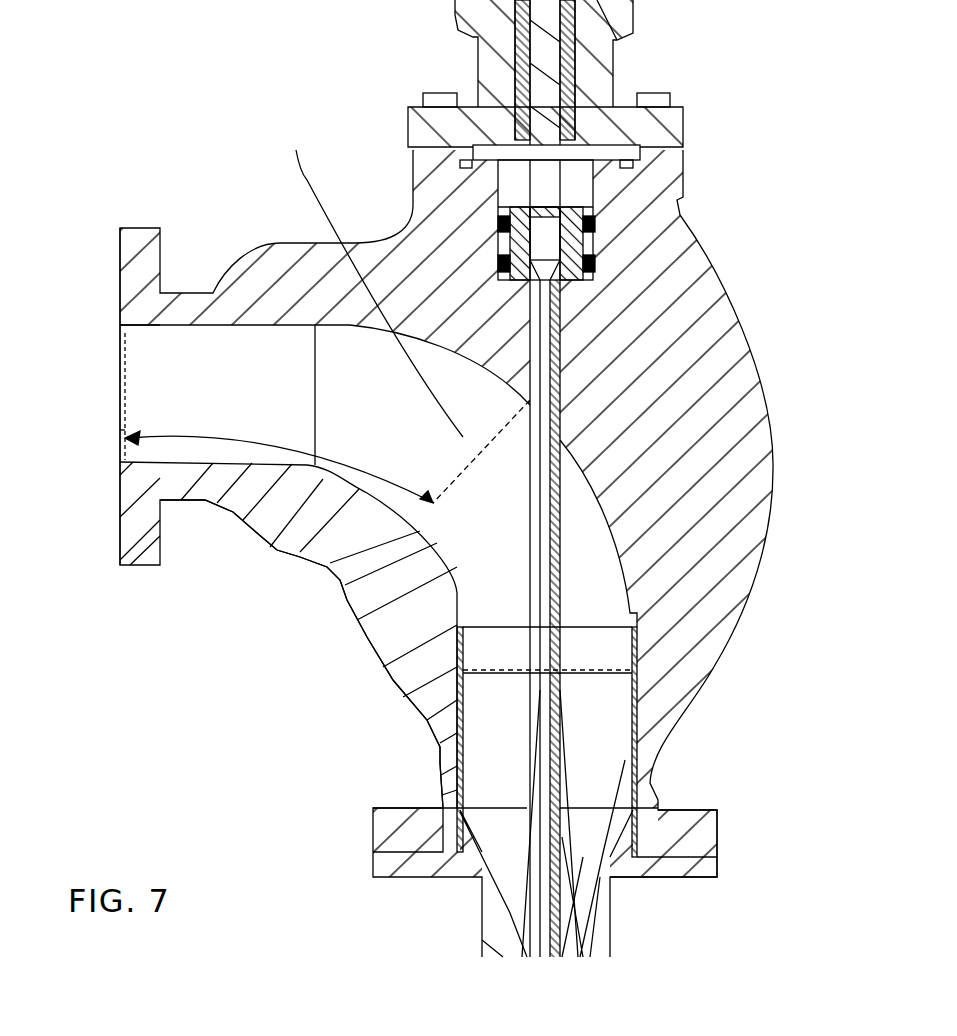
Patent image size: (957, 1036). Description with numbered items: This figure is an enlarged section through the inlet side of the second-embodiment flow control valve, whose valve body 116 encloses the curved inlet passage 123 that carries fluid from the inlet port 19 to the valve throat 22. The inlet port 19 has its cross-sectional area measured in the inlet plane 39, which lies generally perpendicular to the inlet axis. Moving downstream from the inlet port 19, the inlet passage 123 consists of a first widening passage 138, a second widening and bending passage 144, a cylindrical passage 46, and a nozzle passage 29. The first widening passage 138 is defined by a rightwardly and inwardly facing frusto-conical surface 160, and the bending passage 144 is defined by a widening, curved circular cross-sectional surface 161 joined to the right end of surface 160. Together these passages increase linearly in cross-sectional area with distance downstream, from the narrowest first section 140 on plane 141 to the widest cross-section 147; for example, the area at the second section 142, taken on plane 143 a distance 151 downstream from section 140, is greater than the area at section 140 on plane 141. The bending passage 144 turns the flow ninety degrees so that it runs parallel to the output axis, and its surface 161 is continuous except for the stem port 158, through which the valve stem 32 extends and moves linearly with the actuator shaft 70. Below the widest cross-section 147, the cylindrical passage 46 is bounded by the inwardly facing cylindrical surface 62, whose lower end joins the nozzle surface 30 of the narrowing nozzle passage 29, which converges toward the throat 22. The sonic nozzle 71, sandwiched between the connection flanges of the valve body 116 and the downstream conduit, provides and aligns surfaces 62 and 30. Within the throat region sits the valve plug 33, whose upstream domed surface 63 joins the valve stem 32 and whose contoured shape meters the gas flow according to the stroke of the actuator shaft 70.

The actuator shaft 70 is at (543, 143).
The valve body 116 is at (733, 235).
The second section 142 is at (379, 277).
The first section 140 is at (118, 333).
The inlet port 19 is at (118, 336).
The plane 141 is at (126, 376).
The frusto-conical surface 160 is at (245, 328).
The first widening passage 138 is at (288, 597).
The plane 39 is at (118, 430).
The distance 151 is at (283, 448).
The second widening and bending passage 144 is at (355, 395).
The curved circular cross-sectional surface 161 is at (463, 360).
The plane 143 is at (460, 480).
The stem port 158 is at (565, 463).
The valve stem 32 is at (562, 583).
The inlet passage 123 is at (483, 575).
The cylindrical surface 62 is at (462, 755).
The cylindrical passage 46 is at (550, 742).
The cross-section 147 is at (593, 670).
The uninterrupted surface 30 is at (493, 815).
The domed surface 63 is at (507, 862).
The nozzle passage 29 is at (597, 858).
The valve throat 22 is at (521, 915).
The sonic nozzle 71 is at (620, 872).
The valve plug 33 is at (575, 918).